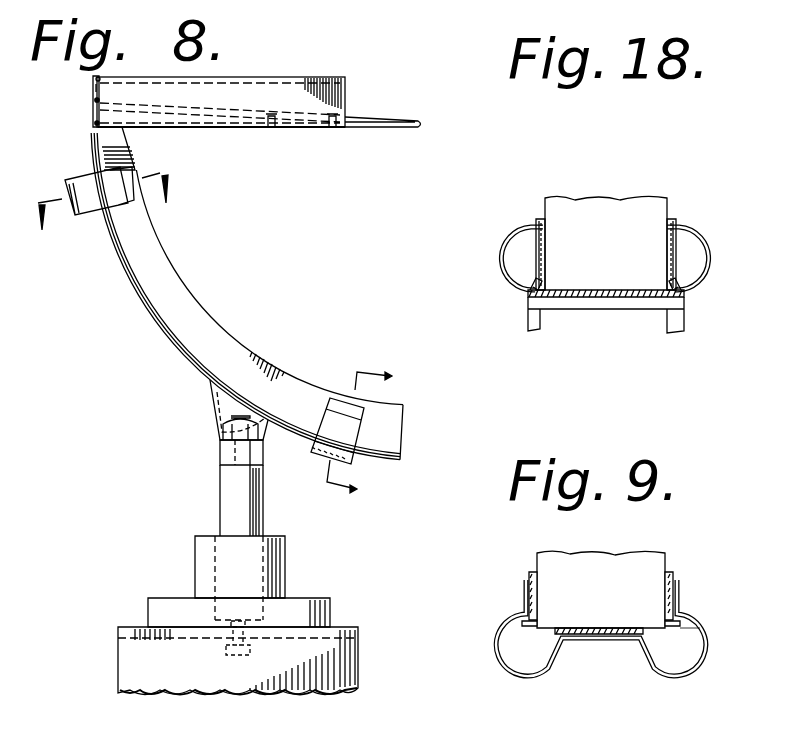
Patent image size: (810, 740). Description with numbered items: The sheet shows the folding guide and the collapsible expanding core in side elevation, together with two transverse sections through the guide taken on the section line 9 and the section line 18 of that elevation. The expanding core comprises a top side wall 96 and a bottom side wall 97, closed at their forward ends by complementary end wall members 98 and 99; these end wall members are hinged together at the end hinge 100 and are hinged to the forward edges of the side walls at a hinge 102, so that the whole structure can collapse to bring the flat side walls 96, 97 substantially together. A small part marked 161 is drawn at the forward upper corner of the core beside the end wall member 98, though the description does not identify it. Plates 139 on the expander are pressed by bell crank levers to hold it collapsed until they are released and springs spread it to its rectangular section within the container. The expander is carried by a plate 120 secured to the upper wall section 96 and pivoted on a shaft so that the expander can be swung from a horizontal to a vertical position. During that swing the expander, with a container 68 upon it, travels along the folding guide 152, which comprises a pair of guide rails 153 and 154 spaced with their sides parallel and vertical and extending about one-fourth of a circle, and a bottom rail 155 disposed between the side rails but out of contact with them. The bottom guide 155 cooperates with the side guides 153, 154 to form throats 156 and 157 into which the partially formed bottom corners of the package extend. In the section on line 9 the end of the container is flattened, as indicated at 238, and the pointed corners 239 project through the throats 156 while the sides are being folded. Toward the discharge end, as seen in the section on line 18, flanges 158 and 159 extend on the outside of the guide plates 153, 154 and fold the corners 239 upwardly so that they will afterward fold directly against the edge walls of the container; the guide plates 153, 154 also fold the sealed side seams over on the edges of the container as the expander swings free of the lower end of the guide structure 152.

In FIG. 8, the top side wall 96 is at (240, 77).
In FIG. 8, the bottom side wall 97 is at (212, 127).
In FIG. 8, the plate 139 is at (268, 127).
In FIG. 8, the plate 120 is at (373, 121).
In FIG. 8, the pivot pin 161 is at (103, 78).
In FIG. 8, the end wall member 98 is at (93, 88).
In FIG. 8, the end hinge 100 is at (93, 100).
In FIG. 8, the end wall member 99 is at (93, 114).
In FIG. 8, the hinge 102 is at (93, 129).
In FIG. 8, the folding guide 152 is at (175, 346).
In FIG. 18, the folding guide 152 is at (686, 311).
In FIG. 9, the folding guide 152 is at (693, 613).
In FIG. 8, the guide rail 153 is at (150, 275).
In FIG. 18, the guide rail 153 is at (538, 220).
In FIG. 9, the guide rail 153 is at (529, 585).
In FIG. 18, the guide rail 154 is at (678, 233).
In FIG. 9, the guide rail 154 is at (676, 588).
In FIG. 8, the bottom rail 155 is at (210, 380).
In FIG. 18, the bottom rail 155 is at (638, 298).
In FIG. 9, the bottom rail 155 is at (625, 641).
In FIG. 18, the throat 156 is at (502, 272).
In FIG. 9, the throat 156 is at (522, 665).
In FIG. 18, the throat 157 is at (708, 275).
In FIG. 18, the flange 158 is at (530, 291).
In FIG. 18, the flange 159 is at (681, 293).
In FIG. 18, the container 68 is at (572, 205).
In FIG. 9, the flattened end 238 is at (575, 625).
In FIG. 9, the pointed corner 239 is at (707, 629).
In FIG. 8, the section line 9— 9 is at (107, 204).
In FIG. 8, the section line 18— 18 is at (351, 432).